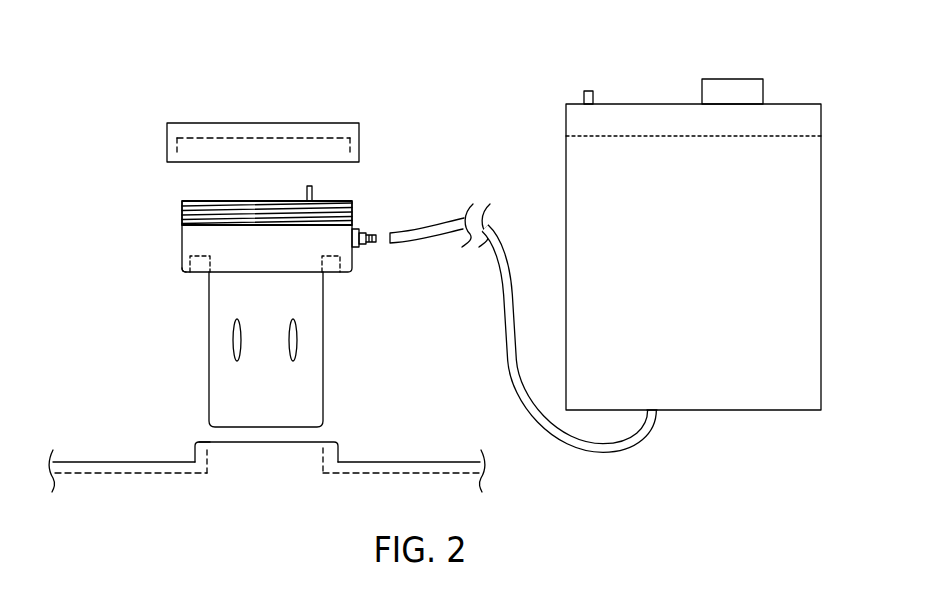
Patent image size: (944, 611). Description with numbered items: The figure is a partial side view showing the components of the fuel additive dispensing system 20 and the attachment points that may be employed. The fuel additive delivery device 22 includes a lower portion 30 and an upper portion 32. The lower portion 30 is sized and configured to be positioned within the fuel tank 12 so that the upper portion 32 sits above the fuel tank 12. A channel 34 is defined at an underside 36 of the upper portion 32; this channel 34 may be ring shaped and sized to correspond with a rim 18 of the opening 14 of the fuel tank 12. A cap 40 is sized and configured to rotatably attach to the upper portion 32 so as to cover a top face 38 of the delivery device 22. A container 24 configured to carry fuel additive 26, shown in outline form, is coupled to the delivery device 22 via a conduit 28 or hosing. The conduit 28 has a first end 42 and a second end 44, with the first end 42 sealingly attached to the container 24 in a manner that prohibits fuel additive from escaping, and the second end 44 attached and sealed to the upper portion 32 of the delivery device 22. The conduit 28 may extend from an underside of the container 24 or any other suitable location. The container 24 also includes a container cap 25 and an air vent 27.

The fuel tank 12 is at (428, 462).
The opening 14 is at (323, 441).
The rim 18 is at (196, 456).
The fuel additive dispensing system 20 is at (162, 56).
The fuel additive delivery device 22 is at (172, 319).
The container 24 is at (822, 202).
The container cap 25 is at (744, 79).
The fuel additive 26 is at (798, 136).
The air vent 27 is at (586, 91).
The conduit 28 is at (500, 258).
The lower portion 30 is at (315, 347).
The upper portion 32 is at (182, 238).
The channel 34 is at (191, 267).
The underside 36 is at (186, 274).
The top face 38 is at (338, 202).
The cap 40 is at (348, 125).
The first end 42 is at (657, 412).
The second end 44 is at (400, 246).